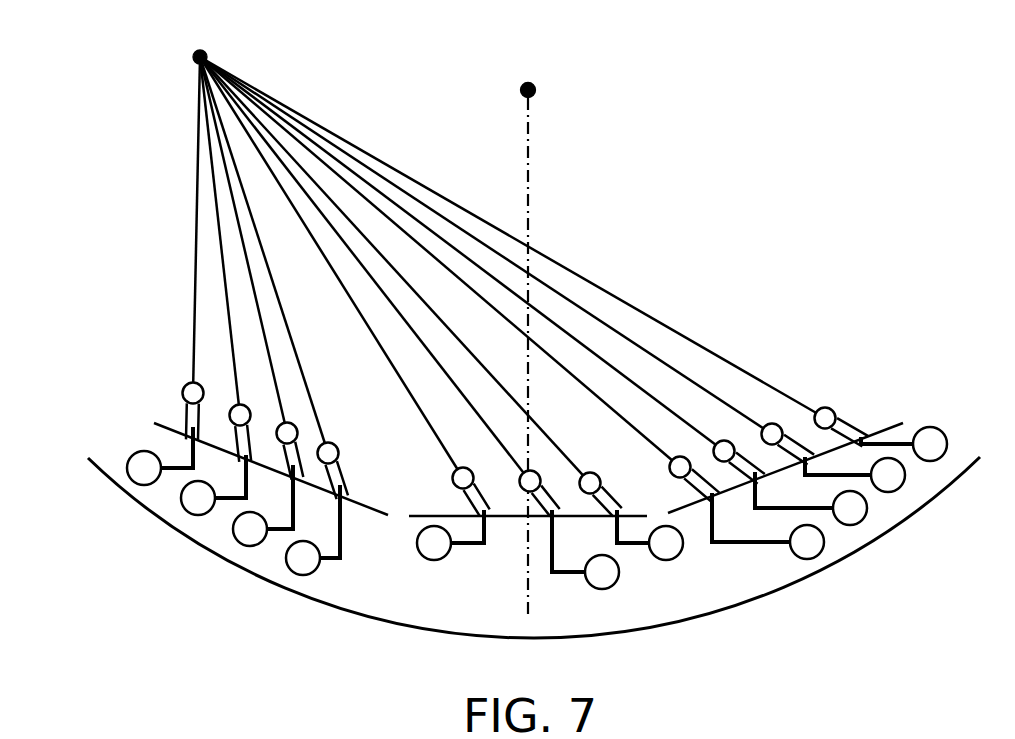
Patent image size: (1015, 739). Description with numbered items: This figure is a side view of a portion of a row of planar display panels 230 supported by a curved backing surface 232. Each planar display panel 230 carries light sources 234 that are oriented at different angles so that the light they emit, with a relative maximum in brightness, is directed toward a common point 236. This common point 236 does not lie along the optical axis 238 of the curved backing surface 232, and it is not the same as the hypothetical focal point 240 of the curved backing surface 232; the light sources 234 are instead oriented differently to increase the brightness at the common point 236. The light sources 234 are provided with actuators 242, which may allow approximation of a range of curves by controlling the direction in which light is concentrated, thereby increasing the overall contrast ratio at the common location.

The planar display panel 230 is at (372, 508).
The curved backing surface 232 is at (407, 627).
The light source 234 is at (188, 420).
The common point 236 is at (203, 48).
The optical axis 238 is at (530, 162).
The hypothetical focal point 240 is at (525, 83).
The actuator 242 is at (930, 427).